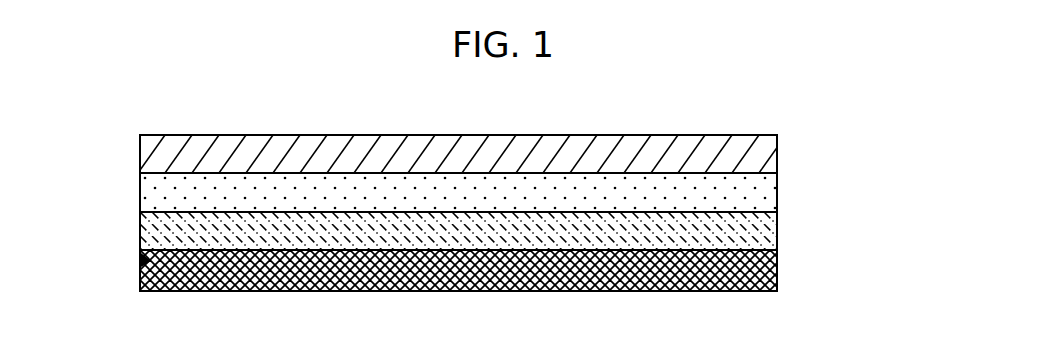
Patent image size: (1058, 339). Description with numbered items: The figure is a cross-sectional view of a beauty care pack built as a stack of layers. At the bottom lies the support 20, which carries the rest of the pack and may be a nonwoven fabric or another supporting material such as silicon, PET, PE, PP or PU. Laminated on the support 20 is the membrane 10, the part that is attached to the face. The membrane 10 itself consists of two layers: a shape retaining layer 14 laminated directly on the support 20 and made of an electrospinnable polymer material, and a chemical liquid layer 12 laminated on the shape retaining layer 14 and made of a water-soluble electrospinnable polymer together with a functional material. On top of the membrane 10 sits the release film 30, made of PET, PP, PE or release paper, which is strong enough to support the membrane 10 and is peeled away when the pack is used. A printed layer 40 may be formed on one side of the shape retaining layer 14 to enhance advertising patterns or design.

The membrane 10 is at (533, 211).
The chemical liquid layer 12 is at (758, 197).
The shape retaining layer 14 is at (758, 235).
The support 20 is at (777, 267).
The release film 30 is at (760, 160).
The printed layer 40 is at (142, 265).